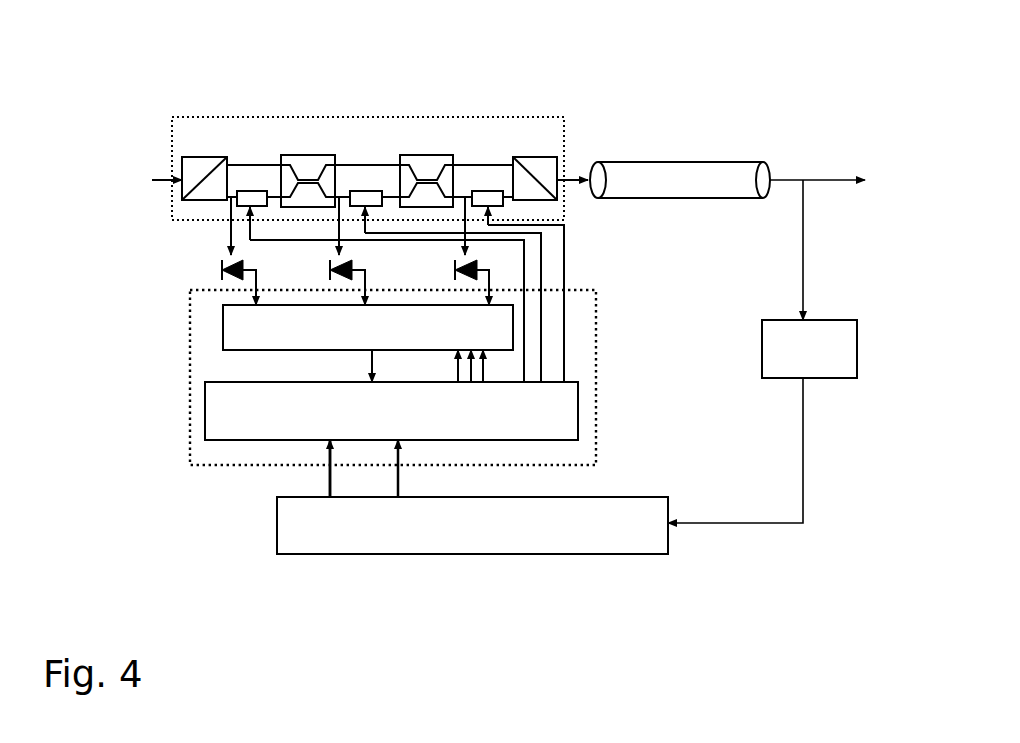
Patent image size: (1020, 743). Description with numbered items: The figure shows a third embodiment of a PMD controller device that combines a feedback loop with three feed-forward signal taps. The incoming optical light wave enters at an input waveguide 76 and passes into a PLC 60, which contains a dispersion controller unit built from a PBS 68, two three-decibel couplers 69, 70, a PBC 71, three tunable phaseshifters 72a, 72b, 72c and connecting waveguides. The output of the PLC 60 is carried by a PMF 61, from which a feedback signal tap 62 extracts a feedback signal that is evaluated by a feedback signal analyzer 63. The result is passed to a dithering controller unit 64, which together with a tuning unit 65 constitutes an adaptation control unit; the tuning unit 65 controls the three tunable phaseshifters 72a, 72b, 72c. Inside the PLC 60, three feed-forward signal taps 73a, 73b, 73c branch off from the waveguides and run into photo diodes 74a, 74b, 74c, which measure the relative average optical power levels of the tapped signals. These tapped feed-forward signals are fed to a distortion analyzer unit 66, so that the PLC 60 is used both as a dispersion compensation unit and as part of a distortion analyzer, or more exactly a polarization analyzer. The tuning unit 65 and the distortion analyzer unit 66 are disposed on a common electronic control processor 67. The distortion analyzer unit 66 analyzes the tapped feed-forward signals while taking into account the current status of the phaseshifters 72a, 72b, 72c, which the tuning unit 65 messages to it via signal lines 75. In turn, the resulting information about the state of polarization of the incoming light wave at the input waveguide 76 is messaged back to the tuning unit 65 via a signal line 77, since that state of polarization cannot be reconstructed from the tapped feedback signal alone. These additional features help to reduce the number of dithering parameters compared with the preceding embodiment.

The PLC 60 is at (556, 124).
The PMF 61 is at (720, 180).
The feedback signal tap 62 is at (801, 233).
The feedback signal analyzer 63 is at (809, 349).
The dithering controller unit 64 is at (472, 497).
The tuning unit 65 is at (391, 411).
The distortion analyzer unit 66 is at (368, 327).
The common electronic control processor 67 is at (237, 452).
The PBS 68 is at (200, 163).
The 3 dB coupler 69 is at (305, 162).
The 3 dB coupler 70 is at (427, 160).
The PBC 71 is at (533, 163).
The tunable phaseshifter 72a is at (247, 191).
The tunable phaseshifter 72b is at (360, 191).
The tunable phaseshifter 72c is at (488, 191).
The feed-forward signal tap 73a is at (230, 208).
The feed-forward signal tap 73b is at (337, 208).
The feed-forward signal tap 73c is at (465, 212).
The photo diode 74a is at (220, 272).
The photo diode 74b is at (330, 272).
The photo diode 74c is at (480, 268).
The signal lines 75 is at (480, 366).
The input waveguide 76 is at (155, 180).
The signal line 77 is at (371, 360).